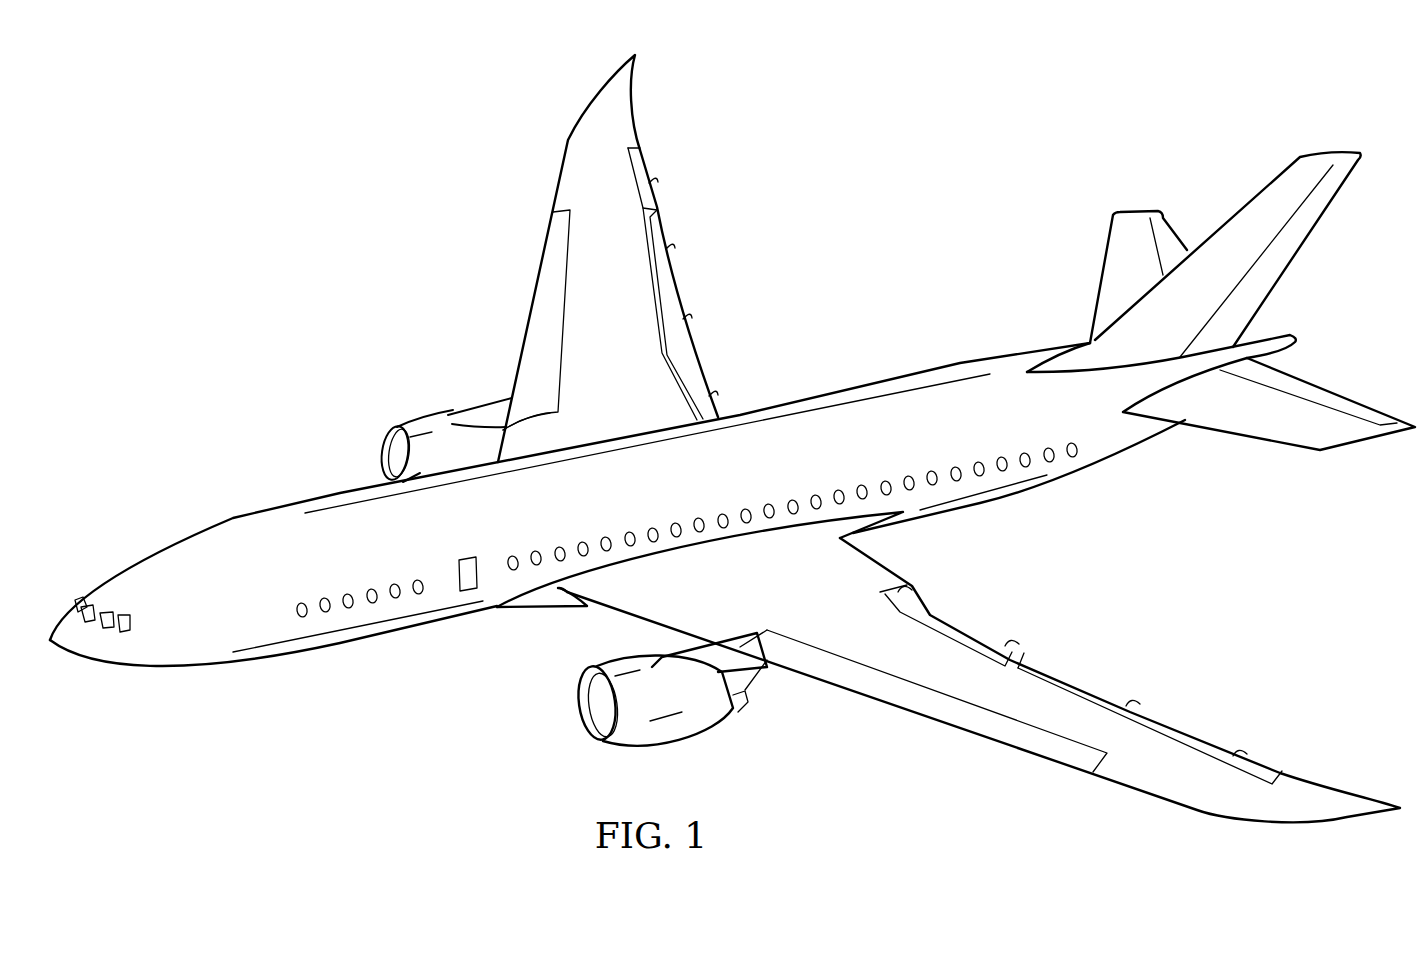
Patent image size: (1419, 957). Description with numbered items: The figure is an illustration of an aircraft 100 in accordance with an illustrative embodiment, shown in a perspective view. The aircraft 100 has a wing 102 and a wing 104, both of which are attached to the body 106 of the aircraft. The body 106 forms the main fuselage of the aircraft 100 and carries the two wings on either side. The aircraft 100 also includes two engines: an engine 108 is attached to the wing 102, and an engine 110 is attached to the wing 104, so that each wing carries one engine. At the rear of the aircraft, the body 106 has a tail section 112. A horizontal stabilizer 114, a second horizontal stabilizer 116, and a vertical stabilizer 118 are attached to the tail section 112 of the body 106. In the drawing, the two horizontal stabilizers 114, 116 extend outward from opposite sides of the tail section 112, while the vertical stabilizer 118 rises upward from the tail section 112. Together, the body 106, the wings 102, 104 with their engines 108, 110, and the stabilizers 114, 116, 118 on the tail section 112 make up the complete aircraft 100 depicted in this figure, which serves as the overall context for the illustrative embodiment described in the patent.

The aircraft 100 is at (333, 212).
The wing 102 is at (567, 143).
The wing 104 is at (1282, 823).
The body 106 is at (235, 520).
The engine 108 is at (425, 412).
The engine 110 is at (670, 743).
The tail section 112 is at (1169, 478).
The horizontal stabilizer 114 is at (1100, 273).
The horizontal stabilizer 116 is at (1272, 440).
The vertical stabilizer 118 is at (1303, 243).